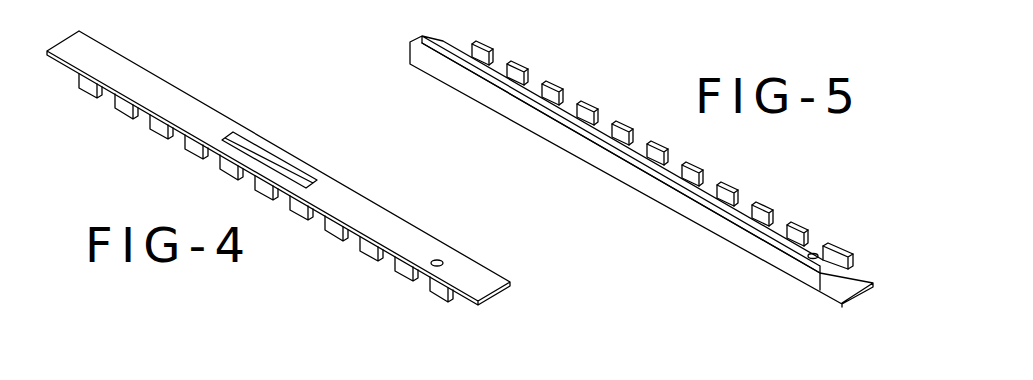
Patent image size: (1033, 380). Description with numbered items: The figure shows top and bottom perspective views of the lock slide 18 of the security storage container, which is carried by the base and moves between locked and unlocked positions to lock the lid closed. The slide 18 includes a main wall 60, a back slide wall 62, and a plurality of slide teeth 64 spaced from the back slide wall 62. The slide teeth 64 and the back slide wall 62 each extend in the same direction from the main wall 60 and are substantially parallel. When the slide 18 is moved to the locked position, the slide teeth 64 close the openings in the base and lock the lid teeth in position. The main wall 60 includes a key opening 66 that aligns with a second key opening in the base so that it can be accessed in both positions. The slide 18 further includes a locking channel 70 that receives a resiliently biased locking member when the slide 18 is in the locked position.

In FIG. 4, the lock slide 18 is at (276, 161).
In FIG. 5, the lock slide 18 is at (644, 160).
In FIG. 4, the main wall 60 is at (106, 63).
In FIG. 5, the back slide wall 62 is at (588, 143).
In FIG. 4, the slide teeth 64 is at (160, 128).
In FIG. 5, the slide teeth 64 is at (515, 63).
In FIG. 4, the key opening 66 is at (440, 258).
In FIG. 5, the key opening 66 is at (815, 254).
In FIG. 4, the locking channel 70 is at (275, 162).